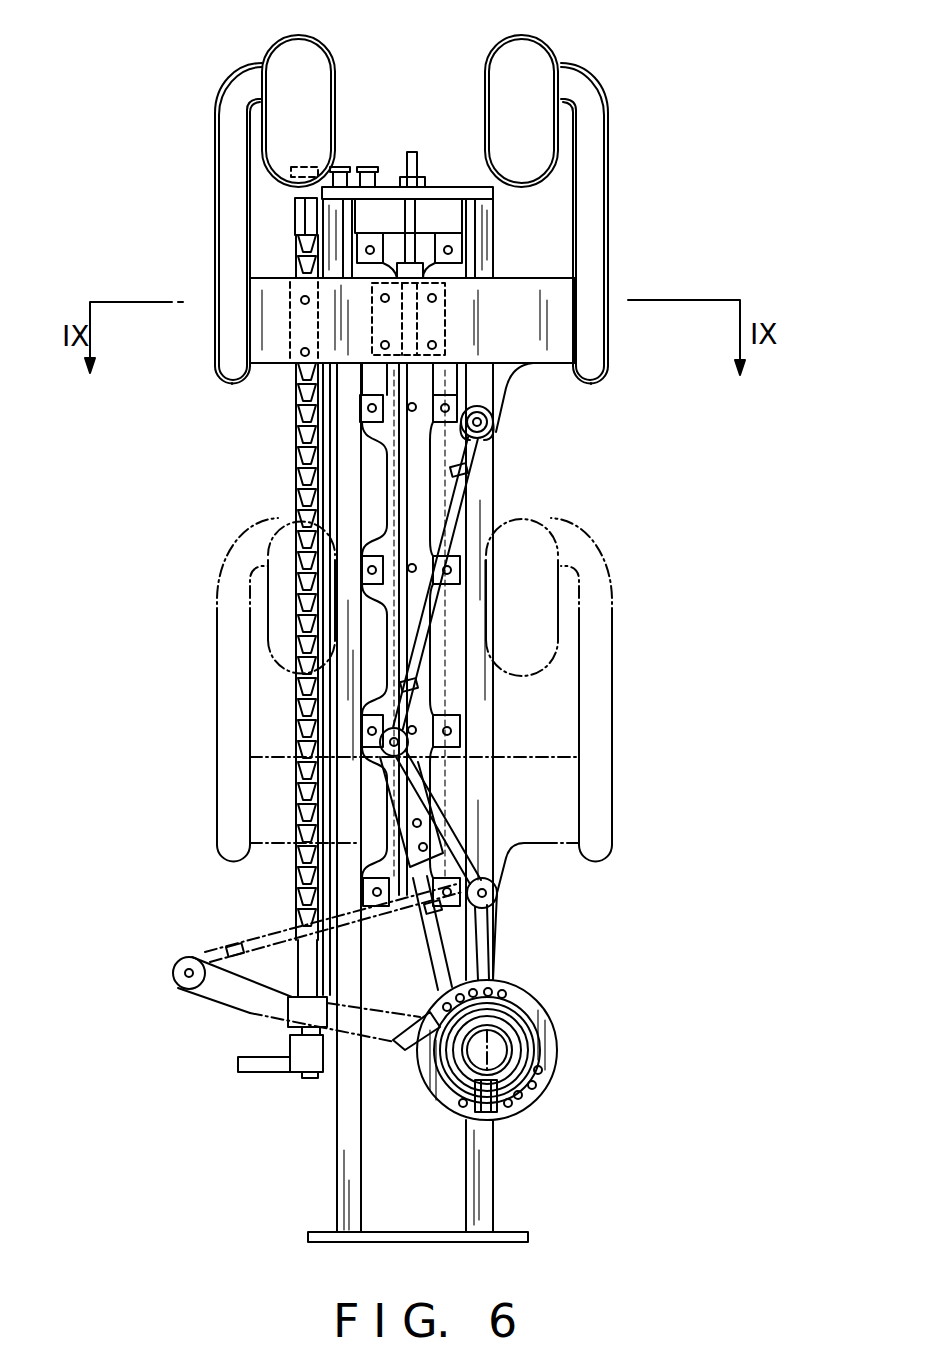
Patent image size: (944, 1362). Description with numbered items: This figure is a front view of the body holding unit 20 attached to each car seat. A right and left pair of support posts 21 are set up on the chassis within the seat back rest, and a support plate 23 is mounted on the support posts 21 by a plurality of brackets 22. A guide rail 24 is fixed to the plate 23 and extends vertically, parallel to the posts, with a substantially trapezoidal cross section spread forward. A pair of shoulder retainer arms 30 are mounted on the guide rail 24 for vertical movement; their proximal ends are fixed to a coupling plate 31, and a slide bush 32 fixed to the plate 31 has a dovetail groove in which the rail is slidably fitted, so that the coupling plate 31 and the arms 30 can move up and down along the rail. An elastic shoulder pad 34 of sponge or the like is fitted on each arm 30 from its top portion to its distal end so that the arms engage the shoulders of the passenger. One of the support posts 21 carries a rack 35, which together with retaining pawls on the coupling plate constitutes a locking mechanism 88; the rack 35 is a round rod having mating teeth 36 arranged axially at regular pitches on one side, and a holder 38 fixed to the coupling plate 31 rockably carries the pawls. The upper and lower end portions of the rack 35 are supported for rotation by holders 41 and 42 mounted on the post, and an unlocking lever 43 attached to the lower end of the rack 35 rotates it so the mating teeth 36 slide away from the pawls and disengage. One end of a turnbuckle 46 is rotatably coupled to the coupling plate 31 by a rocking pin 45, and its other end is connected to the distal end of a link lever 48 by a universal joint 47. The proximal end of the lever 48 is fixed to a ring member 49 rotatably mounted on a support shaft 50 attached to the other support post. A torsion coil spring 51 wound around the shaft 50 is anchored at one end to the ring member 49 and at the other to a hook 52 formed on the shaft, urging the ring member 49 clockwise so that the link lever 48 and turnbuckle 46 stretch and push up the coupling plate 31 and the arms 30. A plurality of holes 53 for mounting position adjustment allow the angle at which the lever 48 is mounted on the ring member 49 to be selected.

The pump drive unit 20 is at (668, 437).
The support posts 21 is at (348, 1138).
The brackets 22 is at (368, 408).
The support plate 23 is at (430, 545).
The guide rail 24 is at (402, 472).
The shoulder retainer arms 30 is at (222, 118).
The coupling plate 31 is at (560, 343).
The slide bush 32 is at (437, 315).
The elastic shoulder pad 34 is at (320, 64).
The rack 35 is at (296, 216).
The mating teeth 36 is at (297, 462).
The holder 38 is at (298, 312).
The holder 41 is at (352, 185).
The holder 42 is at (290, 1024).
The unlocking lever 43 is at (257, 1068).
The rocking pin 45 is at (496, 432).
The turnbuckle 46 is at (435, 612).
The universal joint 47 is at (378, 738).
The link lever 48 is at (415, 800).
The ring member 49 is at (513, 992).
The support shaft 50 is at (493, 1053).
The torsion coil spring 51 is at (531, 1042).
The hook 52 is at (496, 1105).
The holes 53 is at (540, 1093).
The locking mechanism 88 is at (200, 377).